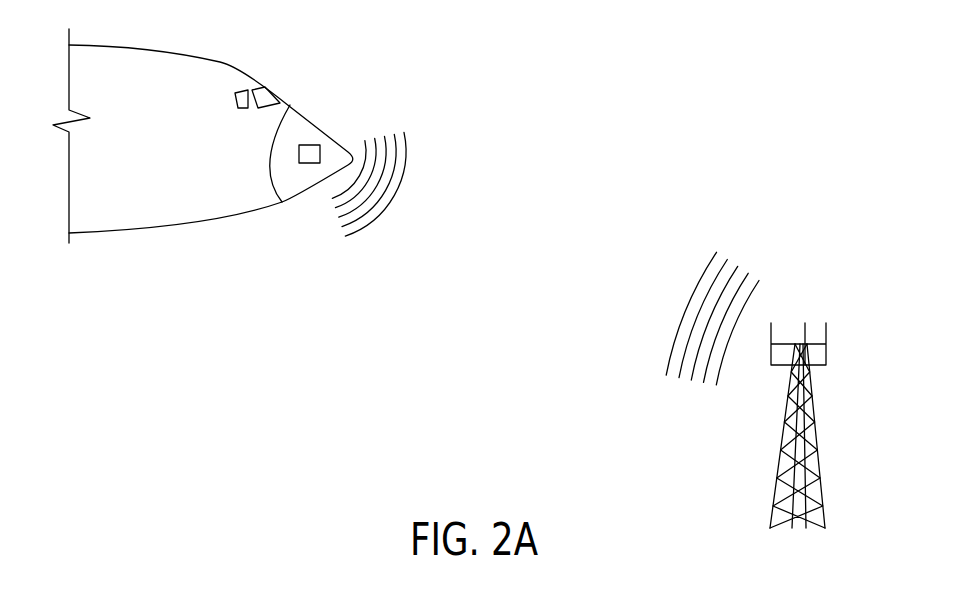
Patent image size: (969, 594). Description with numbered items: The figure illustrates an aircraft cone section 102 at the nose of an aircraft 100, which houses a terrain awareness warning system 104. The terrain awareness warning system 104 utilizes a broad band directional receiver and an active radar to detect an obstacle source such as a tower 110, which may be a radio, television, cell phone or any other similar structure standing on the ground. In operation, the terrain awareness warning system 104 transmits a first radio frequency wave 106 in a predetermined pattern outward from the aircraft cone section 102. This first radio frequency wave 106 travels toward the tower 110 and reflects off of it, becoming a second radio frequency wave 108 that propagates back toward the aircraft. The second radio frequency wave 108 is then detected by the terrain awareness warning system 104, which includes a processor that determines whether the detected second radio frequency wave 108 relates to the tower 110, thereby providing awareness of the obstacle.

The aircraft 100 is at (198, 65).
The aircraft cone section 102 is at (302, 118).
The terrain awareness warning system 104 is at (320, 147).
The first radio frequency wave 106 is at (407, 142).
The second radio frequency wave 108 is at (708, 268).
The tower 110 is at (783, 425).